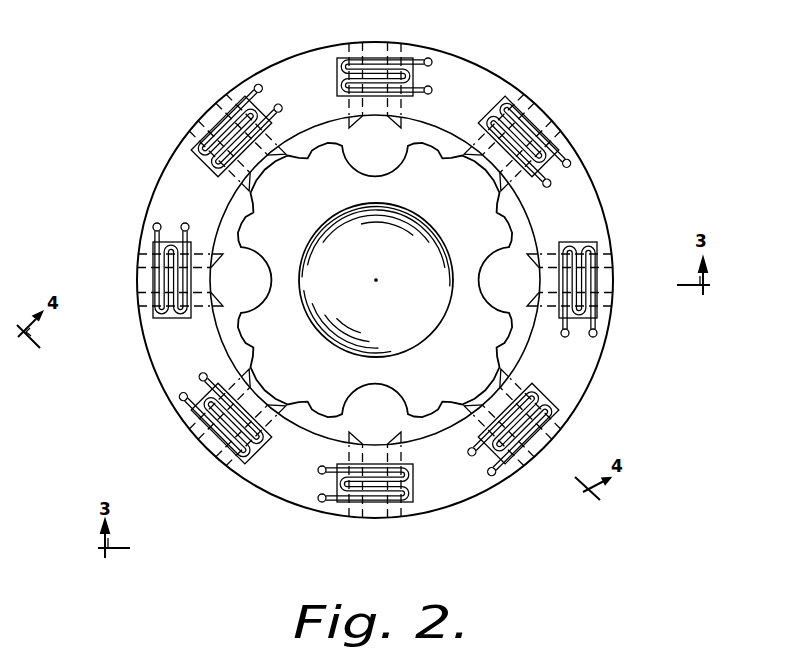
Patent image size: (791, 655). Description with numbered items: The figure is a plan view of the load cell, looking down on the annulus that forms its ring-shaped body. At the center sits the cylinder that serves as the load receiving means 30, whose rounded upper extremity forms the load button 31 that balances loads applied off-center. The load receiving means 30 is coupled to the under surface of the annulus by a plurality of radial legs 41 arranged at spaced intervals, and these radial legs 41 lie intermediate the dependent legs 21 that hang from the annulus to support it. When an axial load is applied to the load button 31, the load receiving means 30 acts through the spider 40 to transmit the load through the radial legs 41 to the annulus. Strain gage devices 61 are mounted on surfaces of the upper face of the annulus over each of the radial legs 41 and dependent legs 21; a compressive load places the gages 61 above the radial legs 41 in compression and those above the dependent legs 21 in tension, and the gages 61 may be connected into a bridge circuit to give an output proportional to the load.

The dependent legs 21 is at (403, 42).
The load receiving means 30 is at (448, 252).
The load button 31 is at (369, 256).
The spider 40 is at (313, 379).
The radial legs 41 is at (513, 90).
The strain gage devices 61 is at (498, 120).